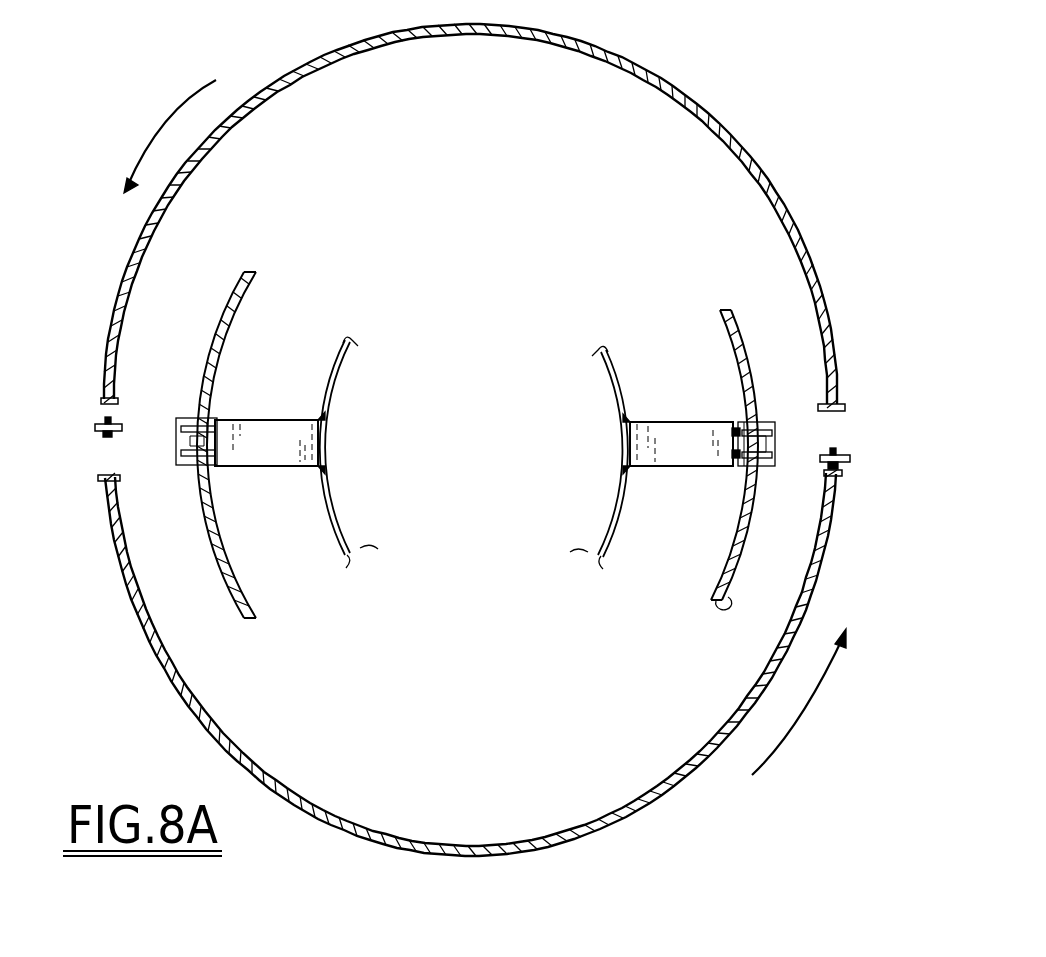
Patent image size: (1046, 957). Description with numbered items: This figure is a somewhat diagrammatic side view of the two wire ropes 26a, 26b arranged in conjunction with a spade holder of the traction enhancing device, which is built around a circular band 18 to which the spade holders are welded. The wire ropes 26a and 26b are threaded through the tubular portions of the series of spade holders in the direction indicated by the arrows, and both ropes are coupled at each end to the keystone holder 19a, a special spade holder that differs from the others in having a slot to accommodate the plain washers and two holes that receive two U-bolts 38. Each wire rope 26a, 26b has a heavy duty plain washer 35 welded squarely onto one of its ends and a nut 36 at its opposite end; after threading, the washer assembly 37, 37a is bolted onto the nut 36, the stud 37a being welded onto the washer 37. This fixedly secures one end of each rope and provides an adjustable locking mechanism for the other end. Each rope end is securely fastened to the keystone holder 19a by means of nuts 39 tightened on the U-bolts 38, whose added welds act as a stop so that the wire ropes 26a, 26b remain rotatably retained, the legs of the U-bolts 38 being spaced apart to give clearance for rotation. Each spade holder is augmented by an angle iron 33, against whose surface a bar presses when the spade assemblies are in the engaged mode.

The circular band 18 is at (349, 540).
The keystone holder 19a is at (270, 435).
The wire rope 26a is at (693, 95).
The wire rope 26b is at (440, 847).
The angle iron 33 is at (777, 436).
The heavy duty plain washer 35 is at (100, 477).
The nut 36 is at (116, 400).
The washer 37 is at (98, 430).
The stud 37a is at (106, 418).
The U-bolt 38 is at (765, 422).
The nut 39 is at (734, 424).